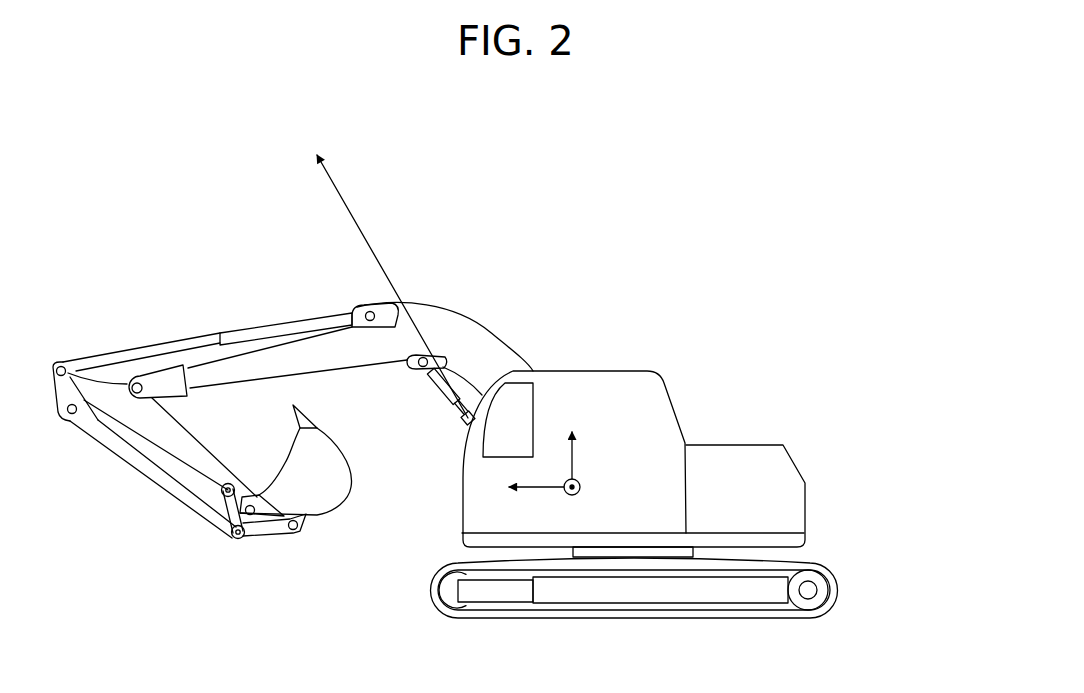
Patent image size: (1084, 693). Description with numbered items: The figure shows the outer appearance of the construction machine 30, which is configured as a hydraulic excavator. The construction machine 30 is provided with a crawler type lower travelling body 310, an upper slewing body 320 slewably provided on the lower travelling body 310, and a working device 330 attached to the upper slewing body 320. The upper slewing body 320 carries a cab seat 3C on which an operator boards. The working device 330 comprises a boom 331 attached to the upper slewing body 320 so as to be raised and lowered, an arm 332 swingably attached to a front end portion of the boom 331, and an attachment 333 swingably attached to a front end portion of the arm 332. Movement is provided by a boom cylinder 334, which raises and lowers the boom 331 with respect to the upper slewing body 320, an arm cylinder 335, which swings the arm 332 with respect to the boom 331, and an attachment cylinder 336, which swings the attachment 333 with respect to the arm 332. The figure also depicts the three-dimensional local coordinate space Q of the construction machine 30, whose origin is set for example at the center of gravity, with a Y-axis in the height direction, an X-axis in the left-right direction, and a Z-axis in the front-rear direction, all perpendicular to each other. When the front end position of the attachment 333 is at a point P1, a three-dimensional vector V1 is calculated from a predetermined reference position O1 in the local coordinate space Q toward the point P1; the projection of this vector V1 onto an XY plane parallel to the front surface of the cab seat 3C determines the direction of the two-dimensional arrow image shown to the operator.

The construction machine 30 is at (806, 290).
The lower travelling body 310 is at (849, 578).
The upper slewing body 320 is at (822, 438).
The cab seat 3C is at (488, 502).
The working device 330 is at (172, 275).
The boom 331 is at (495, 338).
The arm 332 is at (175, 438).
The attachment 333 is at (330, 488).
The boom cylinder 334 is at (436, 372).
The arm cylinder 335 is at (273, 327).
The attachment cylinder 336 is at (148, 467).
The reference position O1 is at (467, 428).
The point P1 is at (313, 137).
The three-dimensional vector V1 is at (360, 223).
The local coordinate space Q is at (586, 452).